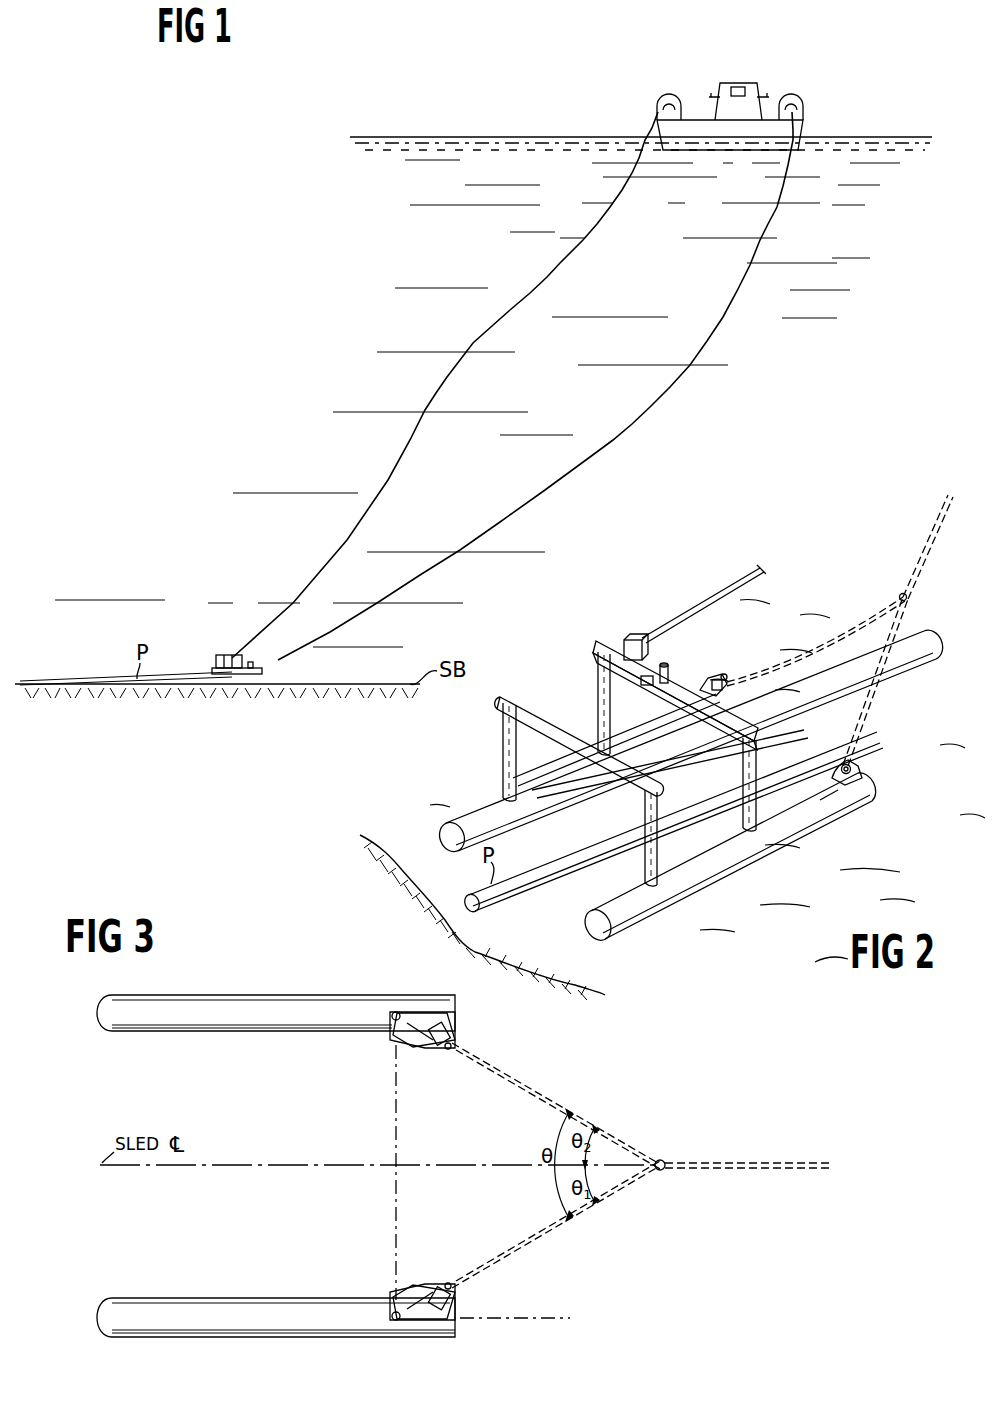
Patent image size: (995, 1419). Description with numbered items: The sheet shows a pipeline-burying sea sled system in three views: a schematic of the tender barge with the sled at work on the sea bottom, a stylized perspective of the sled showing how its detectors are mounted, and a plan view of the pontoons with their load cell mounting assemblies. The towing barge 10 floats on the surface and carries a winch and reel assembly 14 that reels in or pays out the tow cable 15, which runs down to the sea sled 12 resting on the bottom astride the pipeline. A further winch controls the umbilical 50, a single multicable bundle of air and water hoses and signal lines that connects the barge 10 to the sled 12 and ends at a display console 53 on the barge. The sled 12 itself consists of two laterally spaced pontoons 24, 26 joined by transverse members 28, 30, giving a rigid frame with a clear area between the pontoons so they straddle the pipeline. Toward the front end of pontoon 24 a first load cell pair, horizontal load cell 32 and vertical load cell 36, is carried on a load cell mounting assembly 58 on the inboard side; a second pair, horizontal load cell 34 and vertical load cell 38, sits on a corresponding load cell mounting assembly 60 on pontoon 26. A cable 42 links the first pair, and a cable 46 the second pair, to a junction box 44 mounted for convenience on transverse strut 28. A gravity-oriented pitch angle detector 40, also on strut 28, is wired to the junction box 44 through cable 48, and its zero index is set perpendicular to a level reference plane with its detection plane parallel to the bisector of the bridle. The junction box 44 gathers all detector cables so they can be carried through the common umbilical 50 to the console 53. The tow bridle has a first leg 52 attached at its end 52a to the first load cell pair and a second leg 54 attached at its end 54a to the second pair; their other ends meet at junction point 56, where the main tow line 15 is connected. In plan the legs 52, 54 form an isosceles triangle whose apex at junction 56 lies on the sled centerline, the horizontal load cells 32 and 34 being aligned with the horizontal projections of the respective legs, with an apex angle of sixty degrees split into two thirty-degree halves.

In FIG. 1, the towing barge 10 is at (692, 86).
In FIG. 1, the display console 53 is at (756, 84).
In FIG. 1, the winch and reel assembly 14 is at (803, 107).
In FIG. 1, the umbilical 50 is at (386, 478).
In FIG. 2, the umbilical 50 is at (745, 587).
In FIG. 1, the tow cable 15 is at (636, 424).
In FIG. 2, the tow cable 15 is at (932, 534).
In FIG. 3, the tow cable 15 is at (772, 1162).
In FIG. 1, the sea sled 12 is at (218, 640).
In FIG. 2, the sea sled 12 is at (562, 657).
In FIG. 2, the pontoon 24 is at (467, 818).
In FIG. 3, the pontoon 24 is at (271, 1033).
In FIG. 2, the pontoon 26 is at (712, 882).
In FIG. 3, the pontoon 26 is at (153, 1300).
In FIG. 2, the transverse member 28 is at (736, 732).
In FIG. 2, the transverse member 30 is at (532, 720).
In FIG. 2, the horizontal load cell 32 is at (707, 682).
In FIG. 3, the horizontal load cell 32 is at (432, 1040).
In FIG. 2, the horizontal load cell 34 is at (838, 764).
In FIG. 3, the horizontal load cell 34 is at (432, 1290).
In FIG. 2, the vertical load cell 36 is at (722, 688).
In FIG. 3, the vertical load cell 36 is at (460, 1046).
In FIG. 2, the vertical load cell 38 is at (858, 768).
In FIG. 3, the vertical load cell 38 is at (462, 1291).
In FIG. 2, the pitch angle detector 40 is at (663, 666).
In FIG. 2, the cable 42 is at (636, 750).
In FIG. 2, the junction box 44 is at (646, 614).
In FIG. 2, the cable 46 is at (824, 807).
In FIG. 2, the cable 48 is at (641, 683).
In FIG. 2, the first leg 52 is at (836, 636).
In FIG. 3, the first leg 52 is at (569, 1112).
In FIG. 2, the end of first leg 52a is at (724, 675).
In FIG. 3, the end of first leg 52a is at (446, 1054).
In FIG. 2, the second leg 54 is at (875, 702).
In FIG. 3, the second leg 54 is at (563, 1235).
In FIG. 2, the end of second leg 54a is at (851, 763).
In FIG. 3, the end of second leg 54a is at (448, 1282).
In FIG. 2, the junction point 56 is at (902, 596).
In FIG. 3, the junction point 56 is at (660, 1160).
In FIG. 3, the load cell mounting assembly 58 is at (387, 1046).
In FIG. 3, the load cell mounting assembly 60 is at (388, 1294).